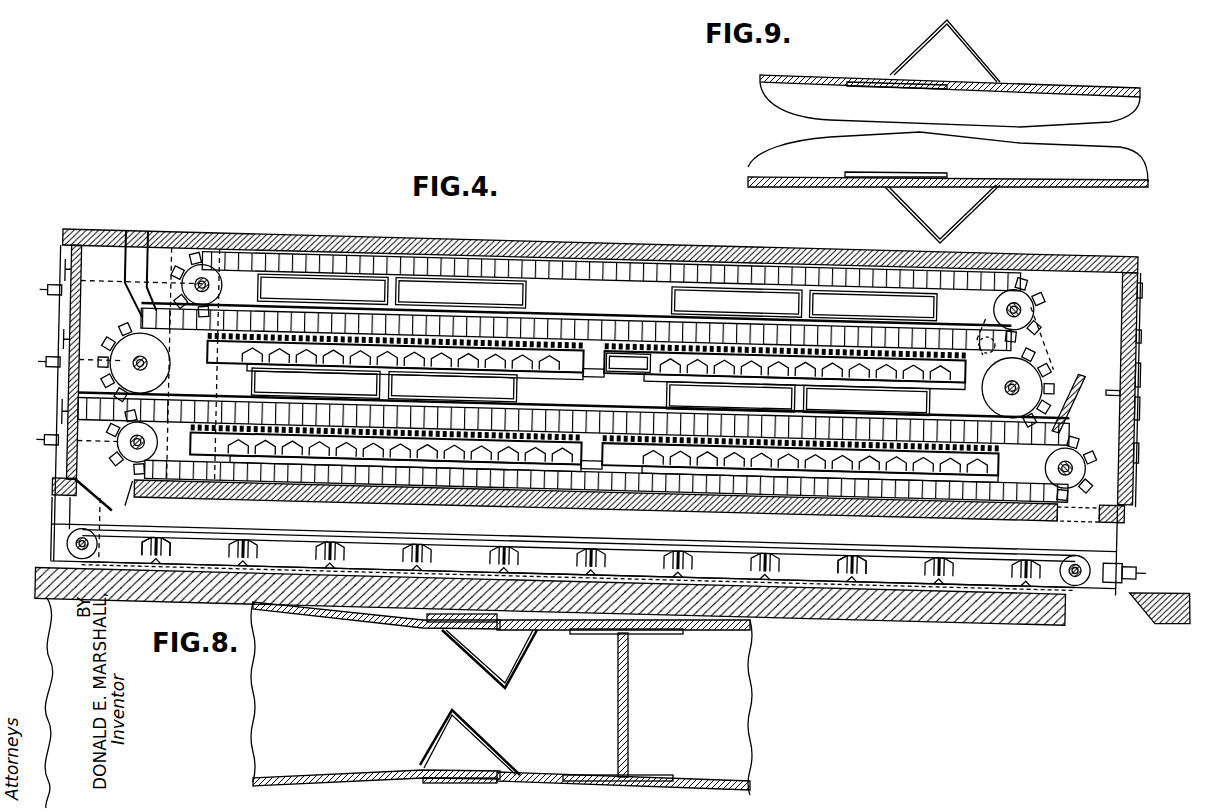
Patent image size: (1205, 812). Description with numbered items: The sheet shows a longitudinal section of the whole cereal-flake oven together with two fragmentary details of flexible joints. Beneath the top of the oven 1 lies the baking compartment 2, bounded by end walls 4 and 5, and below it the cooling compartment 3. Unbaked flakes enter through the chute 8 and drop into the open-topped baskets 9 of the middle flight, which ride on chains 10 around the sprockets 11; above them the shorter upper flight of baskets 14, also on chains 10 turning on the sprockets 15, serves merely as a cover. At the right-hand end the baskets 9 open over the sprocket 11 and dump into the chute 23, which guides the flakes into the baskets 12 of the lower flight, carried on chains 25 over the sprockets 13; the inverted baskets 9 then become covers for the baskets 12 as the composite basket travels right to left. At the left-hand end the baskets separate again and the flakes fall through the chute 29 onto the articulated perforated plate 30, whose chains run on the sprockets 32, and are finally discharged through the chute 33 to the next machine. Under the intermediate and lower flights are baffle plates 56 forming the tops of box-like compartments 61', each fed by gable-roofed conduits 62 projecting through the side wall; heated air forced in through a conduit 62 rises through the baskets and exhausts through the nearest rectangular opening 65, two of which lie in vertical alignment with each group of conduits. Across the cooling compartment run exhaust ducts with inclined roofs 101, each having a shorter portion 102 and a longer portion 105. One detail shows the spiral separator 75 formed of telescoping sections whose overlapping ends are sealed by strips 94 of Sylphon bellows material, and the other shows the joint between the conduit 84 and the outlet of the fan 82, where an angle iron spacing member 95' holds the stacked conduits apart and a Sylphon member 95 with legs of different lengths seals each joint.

In FIG. 4, the top of the oven 1 is at (601, 237).
In FIG. 4, the baking compartment 2 is at (83, 384).
In FIG. 4, the cooling compartment 3 is at (584, 537).
In FIG. 4, the end wall 4 is at (41, 364).
In FIG. 4, the end wall 5 is at (1115, 389).
In FIG. 4, the chute 8 is at (141, 262).
In FIG. 4, the baskets 9 is at (575, 371).
In FIG. 4, the chains 10 is at (576, 375).
In FIG. 4, the sprockets 11 is at (575, 385).
In FIG. 4, the baskets 12 is at (598, 452).
In FIG. 4, the sprockets 13 is at (602, 454).
In FIG. 4, the baskets 14 is at (610, 293).
In FIG. 4, the sprockets 15 is at (608, 297).
In FIG. 4, the chute 23 is at (1071, 390).
In FIG. 4, the chains 25 is at (1051, 490).
In FIG. 4, the chute 29 is at (102, 499).
In FIG. 4, the articulated perforated plate 30 is at (579, 546).
In FIG. 4, the sprockets 32 is at (607, 548).
In FIG. 4, the chute 33 is at (1156, 617).
In FIG. 4, the baffle plates 56 is at (596, 392).
In FIG. 4, the box-like compartment 61' is at (602, 377).
In FIG. 4, the gable-roofed conduits 62 is at (595, 411).
In FIG. 4, the rectangular openings 65 is at (607, 345).
In FIG. 4, the inclined roofs 101 is at (591, 545).
In FIG. 4, the shorter length portion 102 is at (488, 541).
In FIG. 4, the longer length portion 105 is at (537, 555).
In FIG. 9, the spiral separator 75 is at (772, 150).
In FIG. 9, the strips of Sylphon 94 is at (914, 54).
In FIG. 8, the fan 82 is at (331, 621).
In FIG. 8, the conduit 84 is at (718, 633).
In FIG. 8, the Sylphon member 95 is at (478, 702).
In FIG. 8, the angle iron spacing member 95' is at (639, 705).